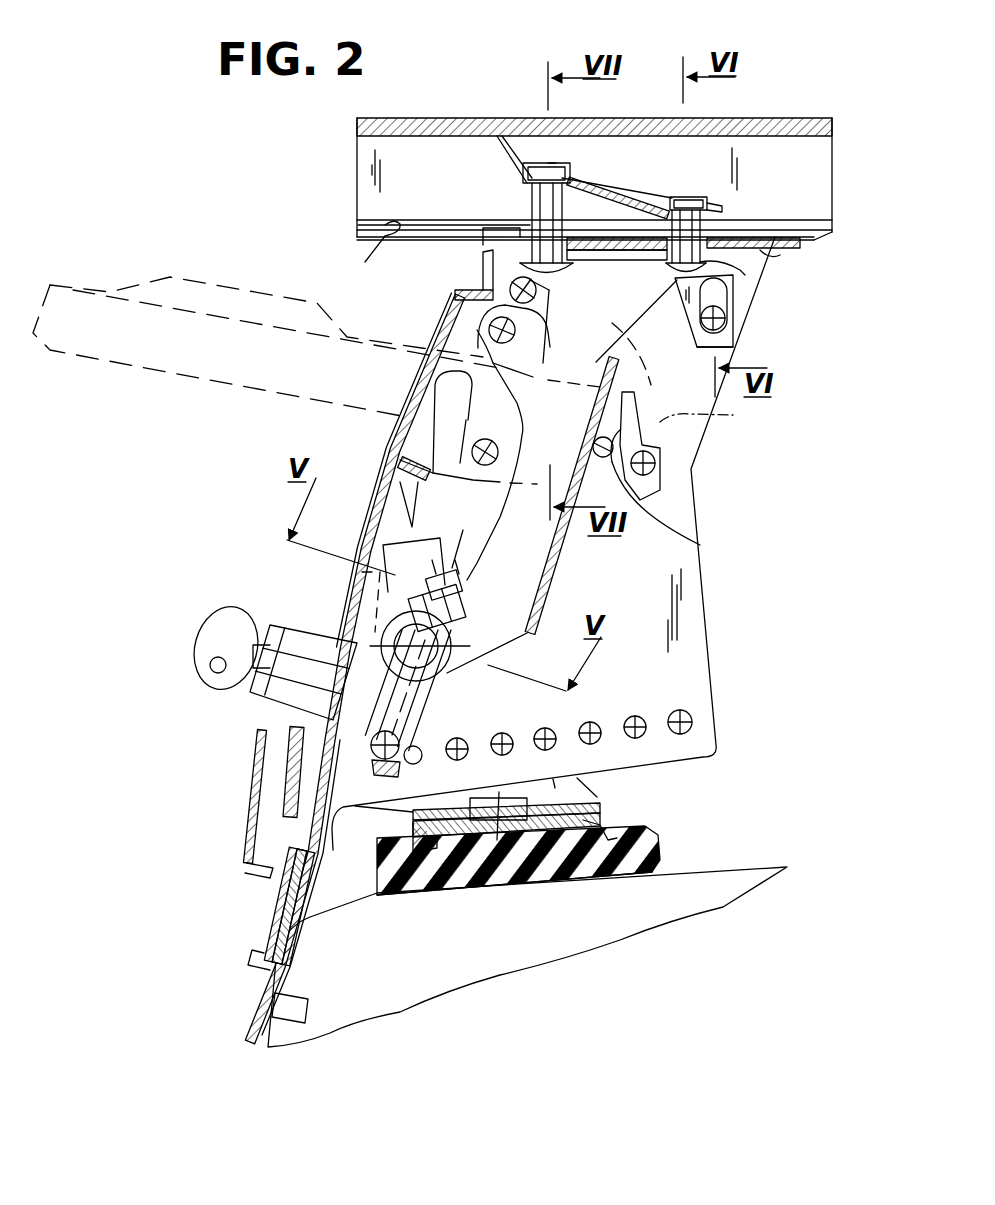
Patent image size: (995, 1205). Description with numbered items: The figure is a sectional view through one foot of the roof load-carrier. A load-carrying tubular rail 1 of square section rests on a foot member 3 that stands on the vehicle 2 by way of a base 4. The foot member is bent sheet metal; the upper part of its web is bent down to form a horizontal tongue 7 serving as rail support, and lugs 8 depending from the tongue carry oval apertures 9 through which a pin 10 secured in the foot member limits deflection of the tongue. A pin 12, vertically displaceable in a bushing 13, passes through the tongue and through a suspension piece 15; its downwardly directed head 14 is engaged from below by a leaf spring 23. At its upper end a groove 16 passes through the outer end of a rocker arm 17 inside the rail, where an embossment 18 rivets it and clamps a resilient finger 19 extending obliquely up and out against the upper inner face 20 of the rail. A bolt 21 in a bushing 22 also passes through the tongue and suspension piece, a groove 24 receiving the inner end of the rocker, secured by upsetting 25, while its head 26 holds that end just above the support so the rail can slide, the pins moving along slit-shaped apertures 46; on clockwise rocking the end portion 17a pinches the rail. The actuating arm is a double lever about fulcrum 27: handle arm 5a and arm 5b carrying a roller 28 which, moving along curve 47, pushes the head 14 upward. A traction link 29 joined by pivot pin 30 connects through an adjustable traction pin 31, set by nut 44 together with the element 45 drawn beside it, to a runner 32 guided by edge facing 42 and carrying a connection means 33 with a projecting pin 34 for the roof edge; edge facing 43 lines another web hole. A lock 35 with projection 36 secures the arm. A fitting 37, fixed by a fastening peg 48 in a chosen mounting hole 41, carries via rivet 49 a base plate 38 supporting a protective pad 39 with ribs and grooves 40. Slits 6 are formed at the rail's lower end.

The load-carrying tubular rail 1 is at (780, 120).
The vehicle 2 is at (560, 940).
The foot member 3 is at (695, 665).
The base 4 is at (640, 810).
The handle arm 5a is at (95, 340).
The arm of actuating lever 5b is at (700, 545).
The slits 6 is at (376, 258).
The tongue 7 is at (736, 282).
The lugs 8 is at (728, 300).
The oval apertures 9 is at (725, 320).
The pin 10 is at (735, 342).
The pin 12 is at (540, 213).
The bushing 13 is at (485, 240).
The head of pin 14 is at (590, 252).
The suspension piece 15 is at (589, 337).
The groove 16 is at (580, 185).
The rocker arm 17 is at (645, 196).
The rocker means end portion 17a is at (740, 222).
The embossment 18 is at (560, 165).
The resilient finger 19 is at (505, 153).
The upper inner face 20 is at (372, 140).
The bolt 21 is at (778, 255).
The bushing 22 is at (714, 268).
The leaf spring 23 is at (617, 282).
The groove 24 is at (690, 198).
The upsetting 25 is at (722, 206).
The head of rivet 26 is at (636, 330).
The fulcrum 27 is at (495, 464).
The pressure-exerting means 28 is at (655, 470).
The traction link 29 is at (526, 613).
The pivot pin 30 is at (480, 326).
The traction pin 31 is at (412, 712).
The runner 32 is at (327, 812).
The connection means 33 is at (305, 952).
The projecting pin 34 is at (312, 1005).
The lock 35 is at (300, 640).
The projection 36 is at (300, 745).
The fitting 37 is at (588, 780).
The base plate 38 is at (642, 828).
The protective pad 39 is at (643, 857).
The ribs and grooves 40 is at (413, 814).
The mounting hole 41 is at (670, 733).
The edge facing 42 is at (395, 472).
The edge facing 43 is at (460, 295).
The nut 44 is at (460, 625).
The washer 45 is at (445, 672).
The slit-shaped apertures 46 is at (388, 222).
The curve 47 is at (713, 410).
The fastening peg 48 is at (508, 738).
The rivet 49 is at (469, 895).